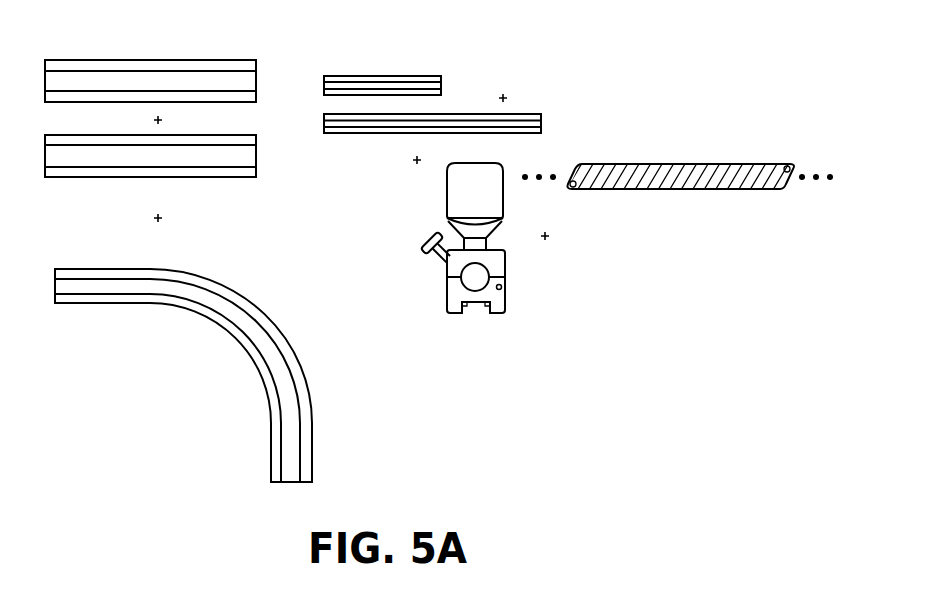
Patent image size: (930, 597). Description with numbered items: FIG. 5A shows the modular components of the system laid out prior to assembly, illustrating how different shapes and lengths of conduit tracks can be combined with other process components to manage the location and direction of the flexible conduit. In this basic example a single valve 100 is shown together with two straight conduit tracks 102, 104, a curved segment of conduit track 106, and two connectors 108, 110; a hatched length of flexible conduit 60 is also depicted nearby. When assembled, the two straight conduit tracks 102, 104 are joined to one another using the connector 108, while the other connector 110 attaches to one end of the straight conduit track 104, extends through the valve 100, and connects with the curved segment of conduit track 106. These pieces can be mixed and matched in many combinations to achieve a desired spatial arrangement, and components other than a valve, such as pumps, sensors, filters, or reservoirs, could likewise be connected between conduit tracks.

The straight conduit track 102 is at (202, 60).
The straight conduit track 104 is at (202, 178).
The curved segment of conduit track 106 is at (277, 327).
The connector 108 is at (388, 76).
The connector 110 is at (527, 114).
The flexible cable/strip 60 is at (685, 164).
The valve 100 is at (489, 314).